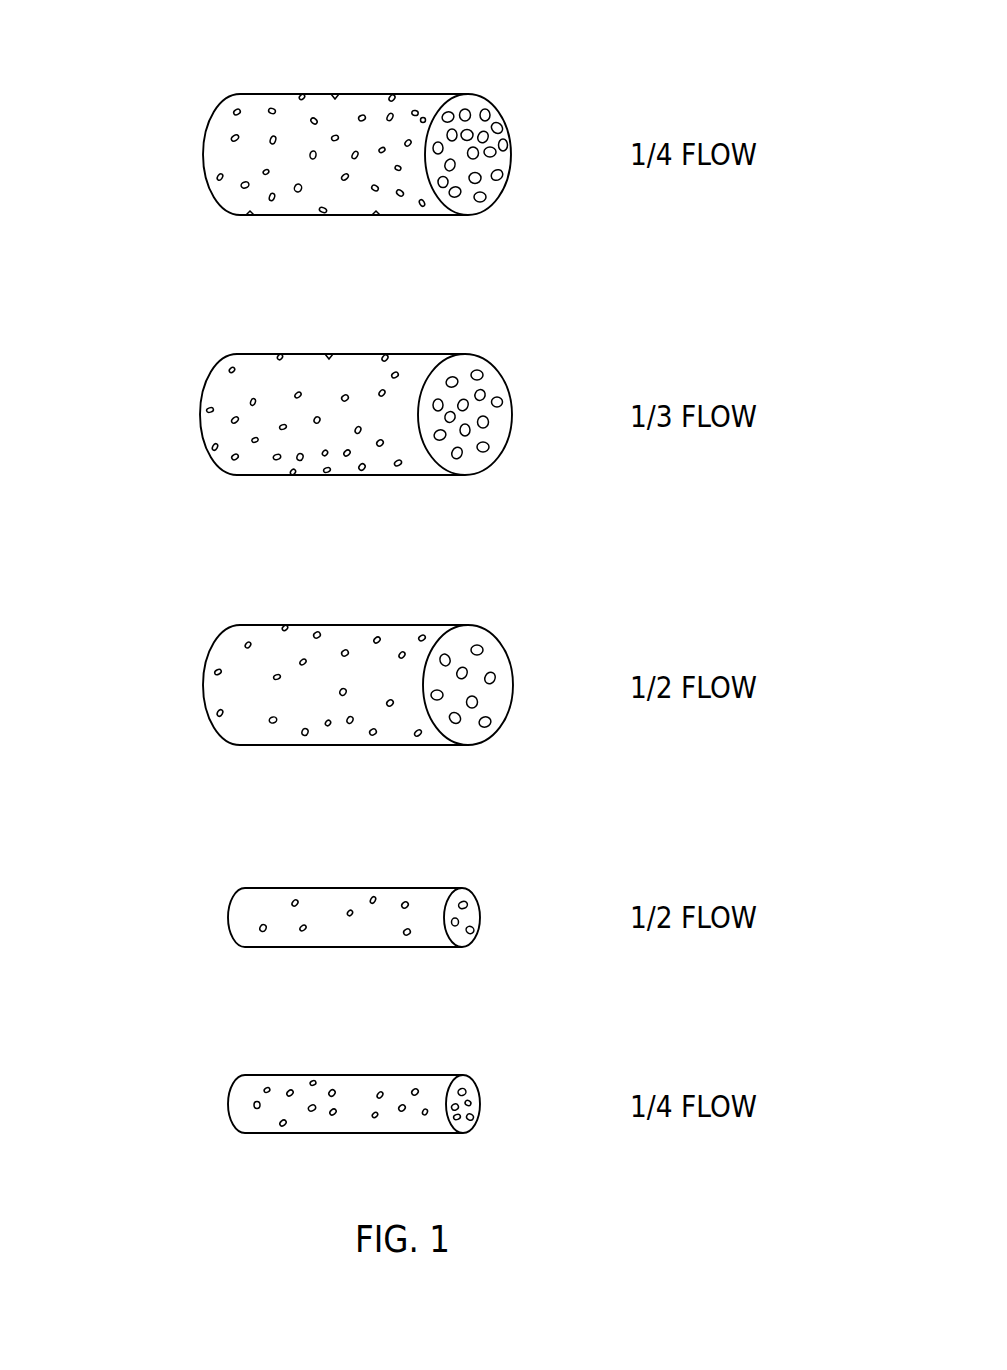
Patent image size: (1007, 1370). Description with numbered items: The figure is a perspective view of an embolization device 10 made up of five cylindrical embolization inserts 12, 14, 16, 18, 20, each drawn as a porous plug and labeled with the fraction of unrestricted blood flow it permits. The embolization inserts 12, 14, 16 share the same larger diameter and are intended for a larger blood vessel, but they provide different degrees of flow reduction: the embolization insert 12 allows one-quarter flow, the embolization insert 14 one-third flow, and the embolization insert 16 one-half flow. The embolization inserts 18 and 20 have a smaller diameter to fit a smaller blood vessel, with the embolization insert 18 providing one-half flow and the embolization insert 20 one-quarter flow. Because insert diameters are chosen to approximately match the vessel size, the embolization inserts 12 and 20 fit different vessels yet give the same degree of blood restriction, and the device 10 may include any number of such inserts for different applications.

The embolization device 10 is at (127, 49).
The embolization insert 12 is at (373, 94).
The embolization insert 14 is at (362, 354).
The embolization insert 16 is at (360, 625).
The embolization insert 18 is at (360, 888).
The embolization insert 20 is at (362, 1075).